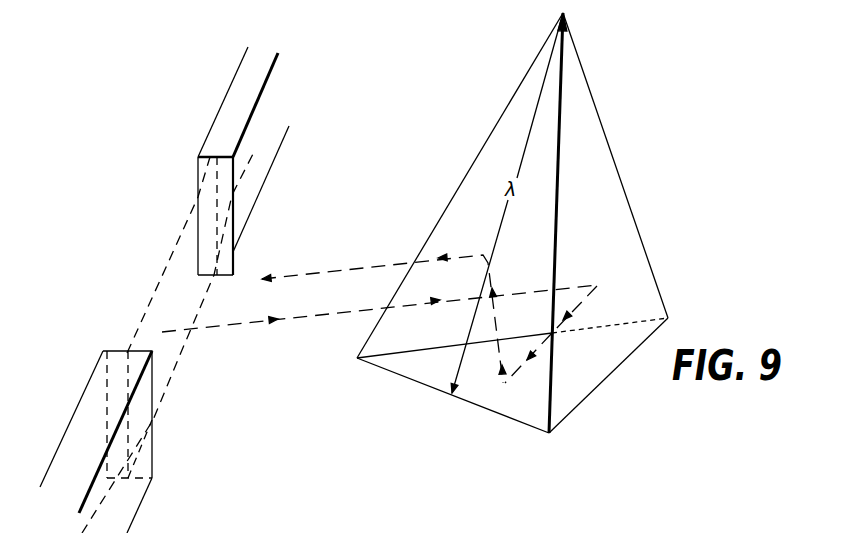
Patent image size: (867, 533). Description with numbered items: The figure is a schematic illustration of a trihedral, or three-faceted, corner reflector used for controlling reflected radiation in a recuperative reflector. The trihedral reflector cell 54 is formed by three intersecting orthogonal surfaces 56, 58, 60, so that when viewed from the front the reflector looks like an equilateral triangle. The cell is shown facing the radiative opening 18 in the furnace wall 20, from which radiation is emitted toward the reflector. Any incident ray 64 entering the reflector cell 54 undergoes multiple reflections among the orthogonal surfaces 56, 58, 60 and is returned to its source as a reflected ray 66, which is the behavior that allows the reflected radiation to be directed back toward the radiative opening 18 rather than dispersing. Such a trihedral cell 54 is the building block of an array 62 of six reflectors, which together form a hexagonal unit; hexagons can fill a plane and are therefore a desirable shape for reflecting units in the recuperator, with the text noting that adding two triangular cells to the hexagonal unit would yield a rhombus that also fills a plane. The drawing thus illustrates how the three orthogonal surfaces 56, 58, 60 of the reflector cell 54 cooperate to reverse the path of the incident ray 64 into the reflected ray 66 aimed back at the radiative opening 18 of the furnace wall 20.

The radiative opening 18 is at (202, 170).
The furnace wall 20 is at (90, 398).
The trihedral reflector cell 54 is at (512, 227).
The orthogonal surface 56 is at (497, 402).
The orthogonal surface 58 is at (480, 170).
The orthogonal surface 60 is at (556, 182).
The array 62 is at (516, 527).
The incident ray 64 is at (307, 313).
The reflected ray 66 is at (350, 269).